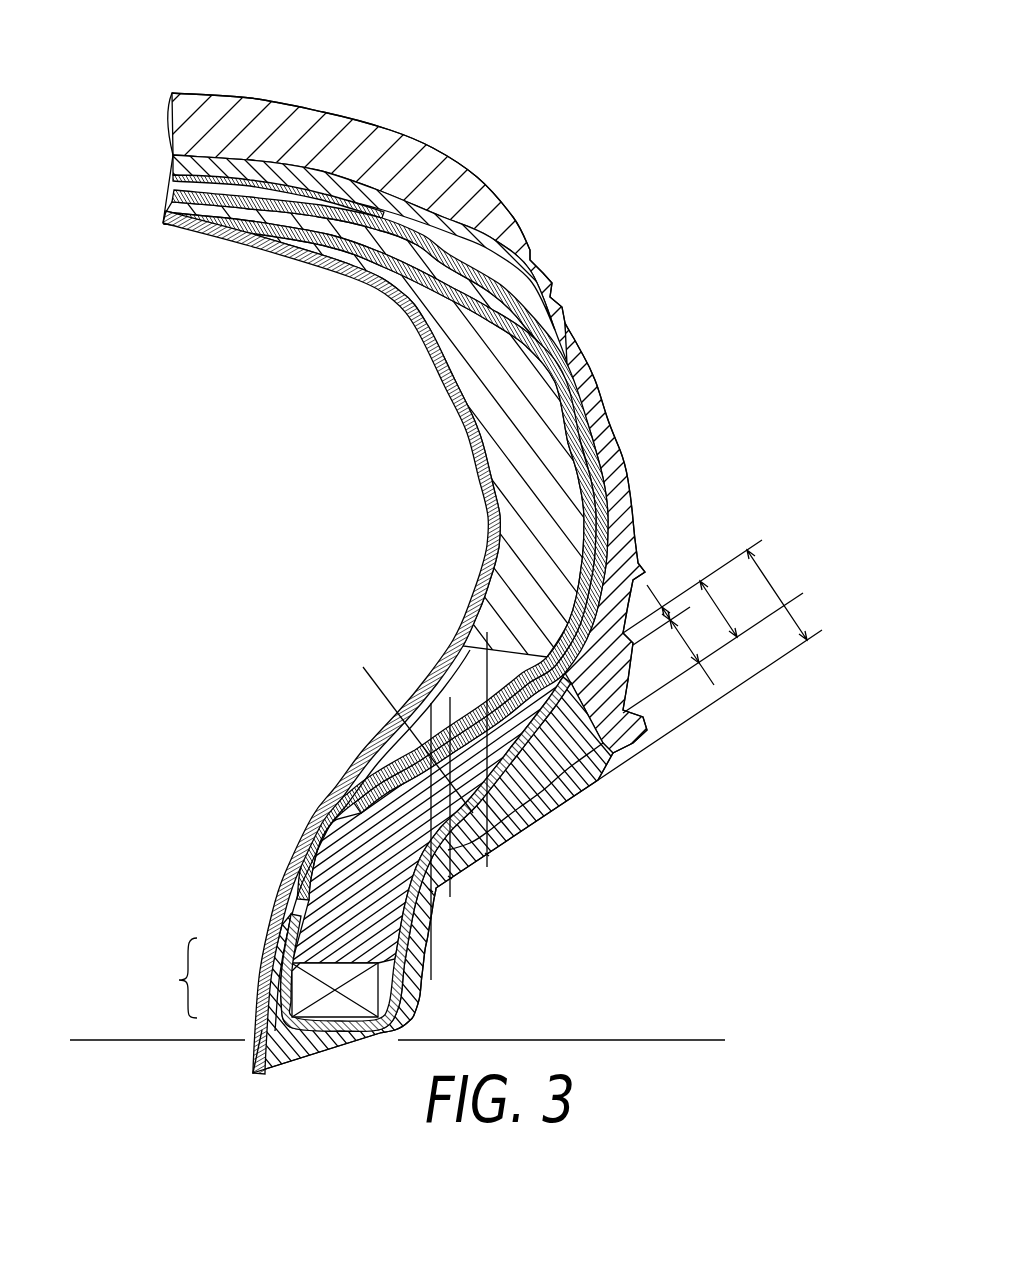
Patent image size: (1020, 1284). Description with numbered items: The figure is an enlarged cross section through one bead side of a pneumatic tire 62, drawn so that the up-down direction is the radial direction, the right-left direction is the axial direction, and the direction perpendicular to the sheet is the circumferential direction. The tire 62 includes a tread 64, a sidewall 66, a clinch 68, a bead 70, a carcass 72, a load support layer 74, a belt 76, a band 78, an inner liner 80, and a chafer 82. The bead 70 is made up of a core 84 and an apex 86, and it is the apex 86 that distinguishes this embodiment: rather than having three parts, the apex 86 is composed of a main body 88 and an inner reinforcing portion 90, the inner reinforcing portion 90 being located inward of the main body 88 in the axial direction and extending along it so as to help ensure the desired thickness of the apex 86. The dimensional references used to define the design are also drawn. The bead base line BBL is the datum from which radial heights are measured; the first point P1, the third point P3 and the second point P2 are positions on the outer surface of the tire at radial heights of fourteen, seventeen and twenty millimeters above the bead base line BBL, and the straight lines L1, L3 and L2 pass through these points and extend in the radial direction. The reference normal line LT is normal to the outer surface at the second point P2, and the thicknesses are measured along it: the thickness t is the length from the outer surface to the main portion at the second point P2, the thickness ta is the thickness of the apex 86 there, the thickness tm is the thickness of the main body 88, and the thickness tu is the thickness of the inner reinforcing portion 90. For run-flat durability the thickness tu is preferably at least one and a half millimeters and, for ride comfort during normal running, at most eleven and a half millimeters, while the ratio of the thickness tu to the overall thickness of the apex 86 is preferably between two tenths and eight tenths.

The pneumatic tire 62 is at (579, 86).
The tread 64 is at (362, 99).
The sidewall 66 is at (639, 461).
The clinch 68 is at (576, 799).
The bead 70 is at (165, 978).
The carcass 72 is at (591, 422).
The load support layer 74 is at (490, 383).
The belt 76 is at (162, 190).
The band 78 is at (247, 180).
The inner liner 80 is at (225, 248).
The chafer 82 is at (282, 1060).
The core 84 is at (310, 995).
The apex 86 is at (310, 951).
The main body 88 is at (363, 952).
The inner reinforcing portion 90 is at (312, 818).
The straight line L1 is at (431, 703).
The straight line L2 is at (487, 632).
The straight line L3 is at (450, 697).
The reference normal line LT is at (380, 694).
The first point P1 is at (431, 891).
The second point P2 is at (487, 854).
The third point P3 is at (450, 878).
The thickness of outer portion t is at (710, 660).
The thickness of apex ta is at (713, 647).
The thickness of main body tm is at (696, 640).
The thickness of inner reinforcing portion tu is at (670, 614).
The bead base line BBL is at (128, 1045).